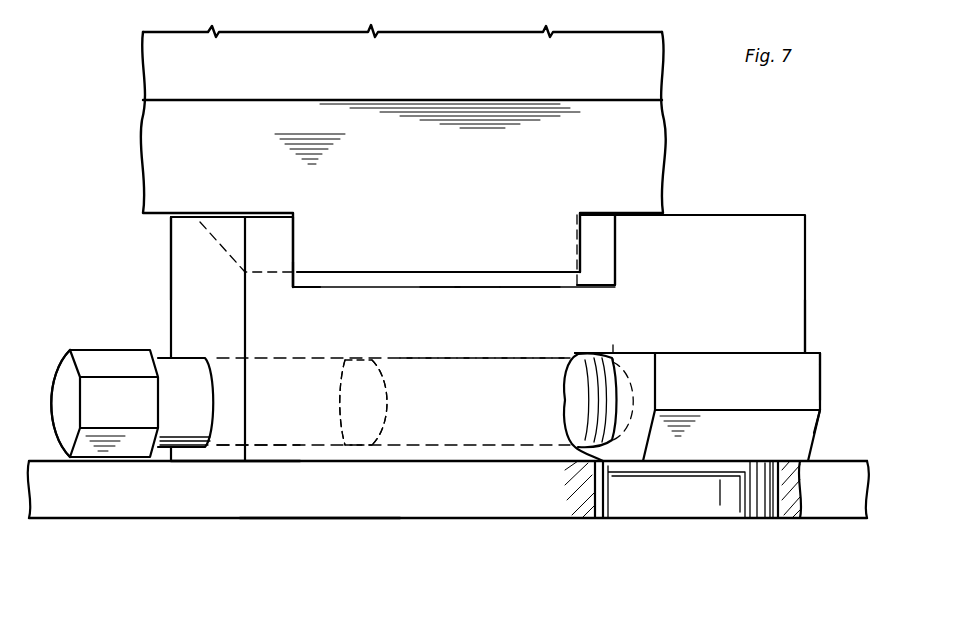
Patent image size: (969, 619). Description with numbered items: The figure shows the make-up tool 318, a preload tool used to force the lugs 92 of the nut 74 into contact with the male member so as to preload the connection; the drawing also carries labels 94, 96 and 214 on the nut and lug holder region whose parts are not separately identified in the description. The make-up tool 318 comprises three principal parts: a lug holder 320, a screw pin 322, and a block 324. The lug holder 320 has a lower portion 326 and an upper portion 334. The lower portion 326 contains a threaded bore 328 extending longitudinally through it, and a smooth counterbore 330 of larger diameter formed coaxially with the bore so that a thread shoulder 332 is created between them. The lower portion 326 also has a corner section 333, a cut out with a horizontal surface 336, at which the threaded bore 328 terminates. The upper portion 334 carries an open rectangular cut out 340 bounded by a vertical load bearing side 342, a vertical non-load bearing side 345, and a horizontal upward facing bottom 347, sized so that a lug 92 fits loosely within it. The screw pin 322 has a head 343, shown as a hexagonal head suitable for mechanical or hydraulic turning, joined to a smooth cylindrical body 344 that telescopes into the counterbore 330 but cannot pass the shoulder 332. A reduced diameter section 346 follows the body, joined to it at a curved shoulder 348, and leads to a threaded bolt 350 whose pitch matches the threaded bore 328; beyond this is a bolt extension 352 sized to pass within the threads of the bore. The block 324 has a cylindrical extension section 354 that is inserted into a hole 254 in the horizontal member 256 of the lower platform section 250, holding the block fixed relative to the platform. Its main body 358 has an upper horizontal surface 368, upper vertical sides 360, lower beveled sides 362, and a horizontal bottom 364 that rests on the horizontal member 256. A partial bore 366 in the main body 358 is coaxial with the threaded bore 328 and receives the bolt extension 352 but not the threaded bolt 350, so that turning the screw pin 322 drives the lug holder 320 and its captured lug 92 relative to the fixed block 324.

The nut 74 is at (668, 133).
The lug 92 is at (445, 243).
The recess surface 94 is at (392, 275).
The groove surface 96 is at (470, 272).
The corner 214 is at (298, 272).
The lower platform section 250 is at (228, 520).
The hole 254 is at (612, 490).
The horizontal member 256 is at (305, 496).
The make-up tool 318 is at (808, 232).
The lug holder 320 is at (738, 233).
The screw pin 322 is at (163, 357).
The block 324 is at (821, 410).
The lower portion 326 is at (222, 455).
The threaded bore 328 is at (415, 446).
The smooth counterbore 330 is at (276, 446).
The thread shoulder 332 is at (372, 358).
The corner section 333 is at (758, 353).
The upper portion 334 is at (200, 252).
The horizontal surface 336 is at (797, 356).
The open rectangular cut out 340 is at (512, 272).
The vertical load bearing side 342 is at (604, 229).
The head 343 is at (63, 356).
The smooth cylindrical body 344 is at (178, 398).
The vertical non-load bearing side 345 is at (297, 247).
The reduced diameter section 346 is at (362, 390).
The horizontal upward facing bottom 347 is at (532, 283).
The curved shoulder 348 is at (347, 358).
The threaded bolt 350 is at (490, 375).
The bolt extension 352 is at (615, 395).
The cylindrical extension section 354 is at (673, 508).
The main body 358 is at (781, 397).
The upper vertical sides 360 is at (822, 382).
The lower beveled sides 362 is at (818, 433).
The horizontal bottom 364 is at (736, 458).
The partial bore 366 is at (615, 352).
The upper horizontal surface 368 is at (697, 352).